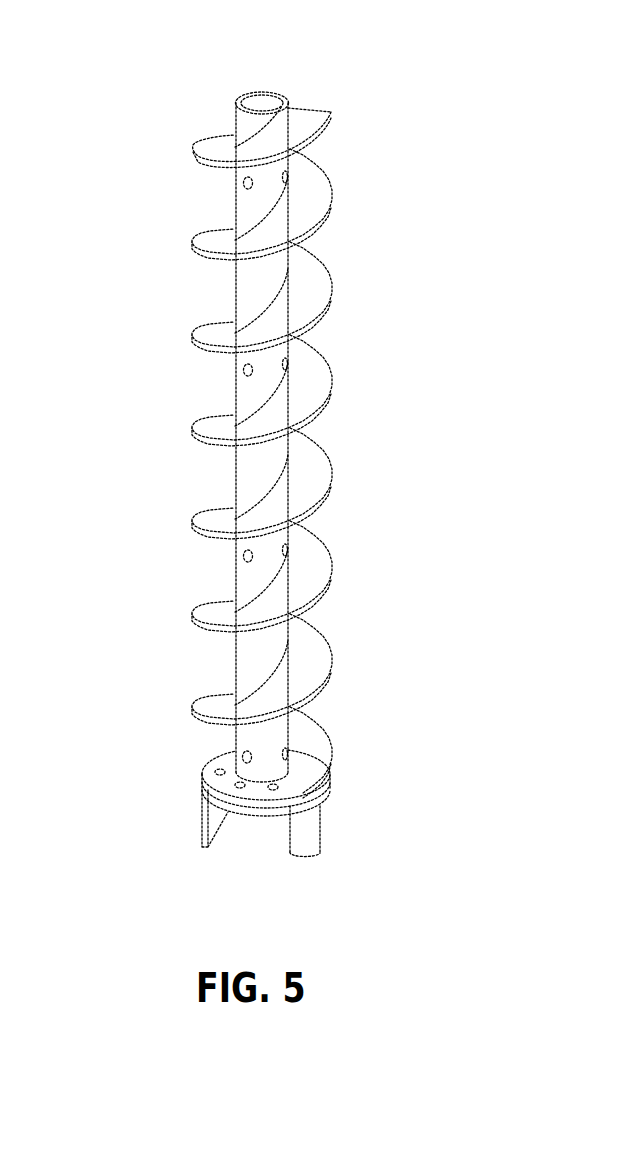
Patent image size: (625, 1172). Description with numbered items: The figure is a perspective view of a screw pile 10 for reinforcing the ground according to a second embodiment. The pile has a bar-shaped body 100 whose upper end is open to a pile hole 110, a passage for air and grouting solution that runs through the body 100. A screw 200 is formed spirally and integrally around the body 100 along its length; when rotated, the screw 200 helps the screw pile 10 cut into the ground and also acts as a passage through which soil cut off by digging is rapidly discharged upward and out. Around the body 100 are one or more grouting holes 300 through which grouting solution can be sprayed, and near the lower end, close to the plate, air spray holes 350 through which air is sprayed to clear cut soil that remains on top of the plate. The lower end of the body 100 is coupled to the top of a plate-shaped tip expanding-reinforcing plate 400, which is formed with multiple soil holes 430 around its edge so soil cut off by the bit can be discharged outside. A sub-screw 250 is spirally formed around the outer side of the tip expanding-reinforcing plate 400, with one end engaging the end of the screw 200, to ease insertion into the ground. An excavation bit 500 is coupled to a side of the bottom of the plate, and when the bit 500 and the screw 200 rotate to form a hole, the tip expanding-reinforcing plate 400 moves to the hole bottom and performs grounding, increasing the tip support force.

The screw pile 10 is at (396, 127).
The body 100 is at (236, 100).
The pile hole 110 is at (260, 103).
The screw 200 is at (317, 280).
The sub-screw 250 is at (257, 820).
The grouting holes 300 is at (248, 371).
The air spray holes 350 is at (222, 757).
The tip expanding-reinforcing plate 400 is at (205, 793).
The soil holes 430 is at (213, 771).
The excavation bit 500 is at (310, 822).